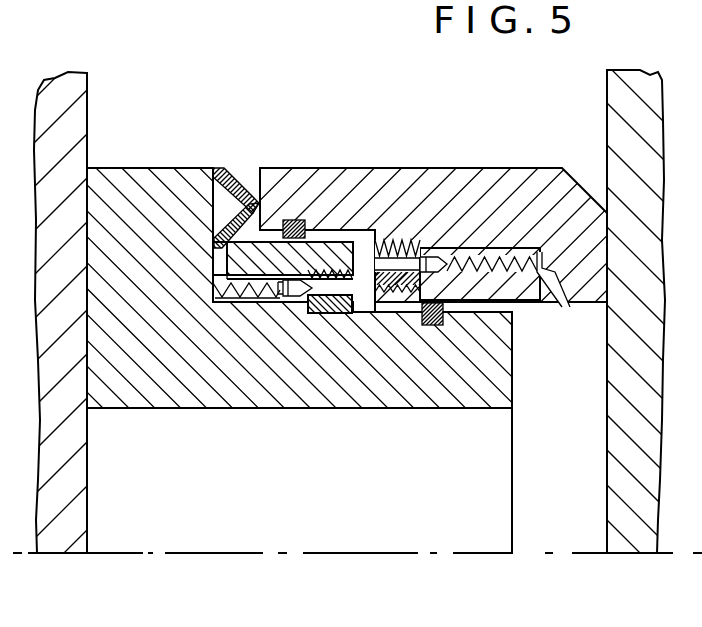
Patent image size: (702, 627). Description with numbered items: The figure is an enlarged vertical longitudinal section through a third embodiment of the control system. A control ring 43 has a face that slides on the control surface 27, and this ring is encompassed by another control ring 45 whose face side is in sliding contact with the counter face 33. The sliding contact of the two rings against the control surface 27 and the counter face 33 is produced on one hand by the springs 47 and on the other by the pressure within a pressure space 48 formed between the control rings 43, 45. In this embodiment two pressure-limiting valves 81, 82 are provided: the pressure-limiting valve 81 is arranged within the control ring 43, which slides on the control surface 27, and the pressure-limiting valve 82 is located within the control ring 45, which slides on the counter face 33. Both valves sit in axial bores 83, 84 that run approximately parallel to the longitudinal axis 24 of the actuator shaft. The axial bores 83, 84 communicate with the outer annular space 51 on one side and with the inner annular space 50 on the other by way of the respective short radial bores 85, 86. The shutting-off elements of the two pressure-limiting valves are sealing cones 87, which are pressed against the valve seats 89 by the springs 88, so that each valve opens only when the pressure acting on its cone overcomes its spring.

The longitudinal axis 24 is at (215, 553).
The control surface 27 is at (88, 538).
The counter face 33 is at (607, 507).
The control ring 43 is at (147, 390).
The control ring 45 is at (513, 188).
The springs 47 is at (203, 168).
The pressure space 48 is at (373, 315).
The inner annular space 50 is at (230, 487).
The outer annular space 51 is at (294, 142).
The pressure-limiting valve 81 is at (262, 293).
The pressure-limiting valve 82 is at (467, 290).
The axial bore 83 is at (275, 297).
The axial bore 84 is at (477, 257).
The short radial bore 85 is at (213, 252).
The short radial bore 86 is at (555, 310).
The sealing cones 87 is at (432, 258).
The springs 88 is at (520, 262).
The valve seats 89 is at (395, 242).